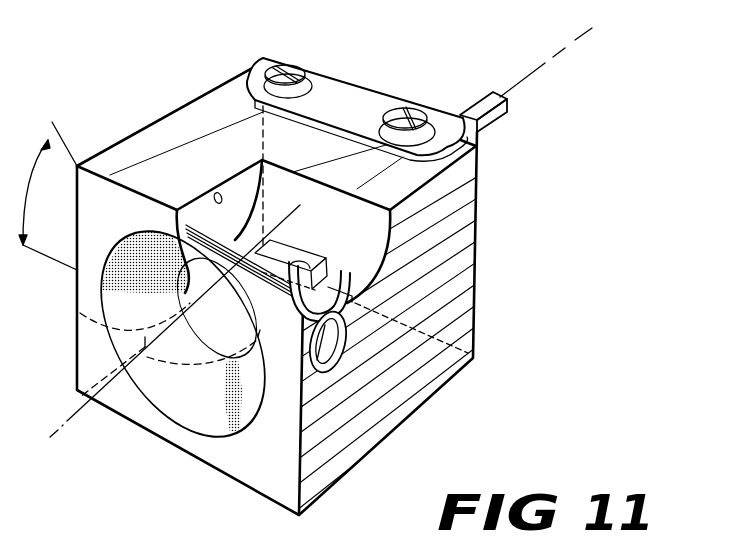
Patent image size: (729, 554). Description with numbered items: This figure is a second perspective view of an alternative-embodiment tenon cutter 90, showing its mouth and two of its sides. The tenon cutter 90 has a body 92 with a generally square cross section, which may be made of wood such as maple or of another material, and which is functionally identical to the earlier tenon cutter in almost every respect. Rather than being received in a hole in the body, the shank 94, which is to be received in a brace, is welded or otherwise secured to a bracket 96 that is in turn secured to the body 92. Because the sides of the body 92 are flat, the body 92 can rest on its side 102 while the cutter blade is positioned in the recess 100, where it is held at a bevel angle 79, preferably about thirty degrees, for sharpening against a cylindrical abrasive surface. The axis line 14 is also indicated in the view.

The tenon cutter 90 is at (317, 268).
The body 92 is at (309, 289).
The shank 94 is at (472, 108).
The bracket 96 is at (340, 95).
The recess 100 is at (80, 313).
The side 102 is at (432, 365).
The axis 14 is at (58, 429).
The bevel angle 79 is at (48, 196).